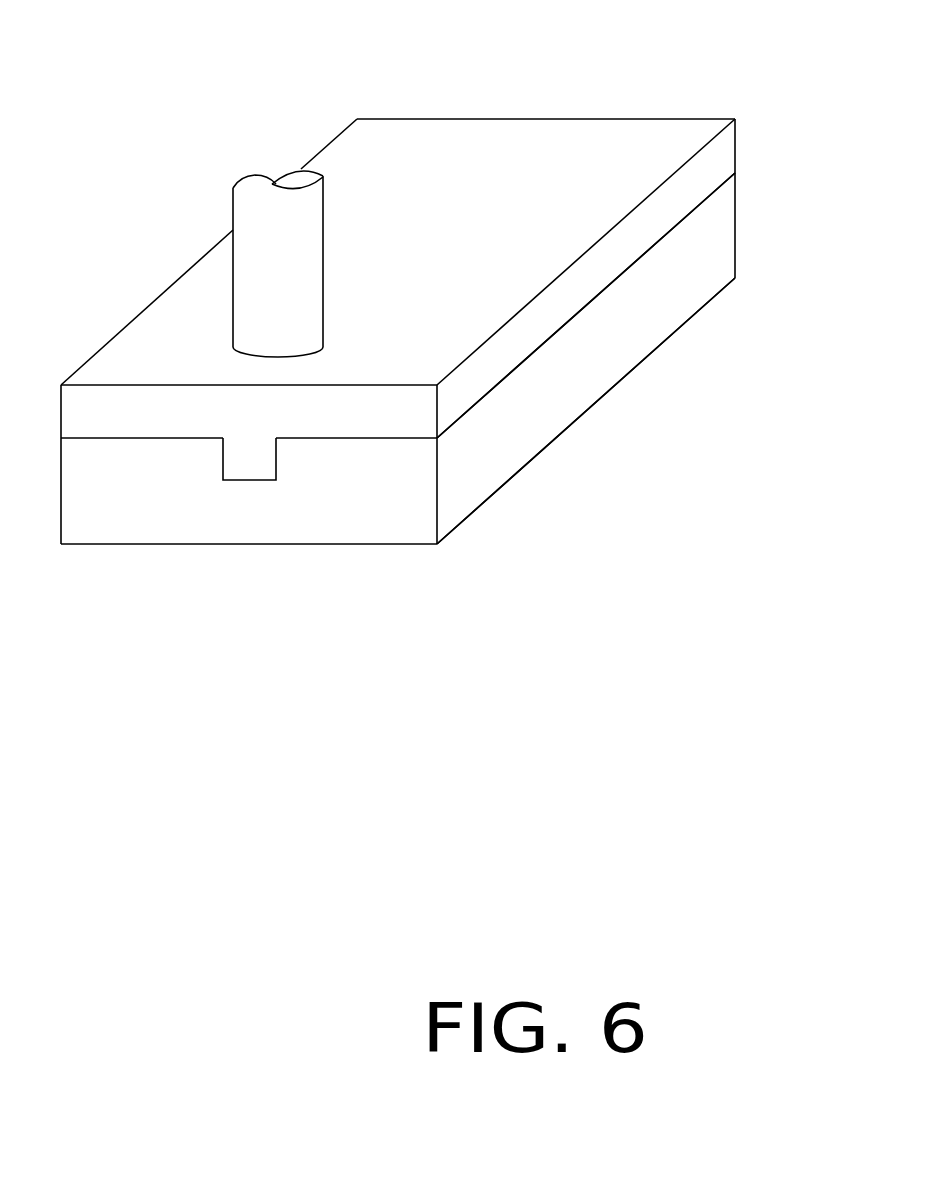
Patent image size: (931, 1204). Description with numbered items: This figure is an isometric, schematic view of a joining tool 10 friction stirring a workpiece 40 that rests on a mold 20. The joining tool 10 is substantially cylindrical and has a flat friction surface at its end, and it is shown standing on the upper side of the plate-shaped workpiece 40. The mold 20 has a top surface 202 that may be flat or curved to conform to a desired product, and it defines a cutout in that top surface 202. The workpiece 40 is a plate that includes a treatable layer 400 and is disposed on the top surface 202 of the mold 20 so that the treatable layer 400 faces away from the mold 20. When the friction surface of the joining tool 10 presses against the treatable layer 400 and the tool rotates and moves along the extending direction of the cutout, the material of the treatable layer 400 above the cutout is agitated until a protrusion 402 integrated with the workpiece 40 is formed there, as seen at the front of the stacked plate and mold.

The joining tool 10 is at (263, 236).
The mold 20 is at (597, 360).
The top surface 202 is at (490, 427).
The workpiece 40 is at (658, 220).
The treatable layer 400 is at (612, 155).
The protrusion 402 is at (249, 458).